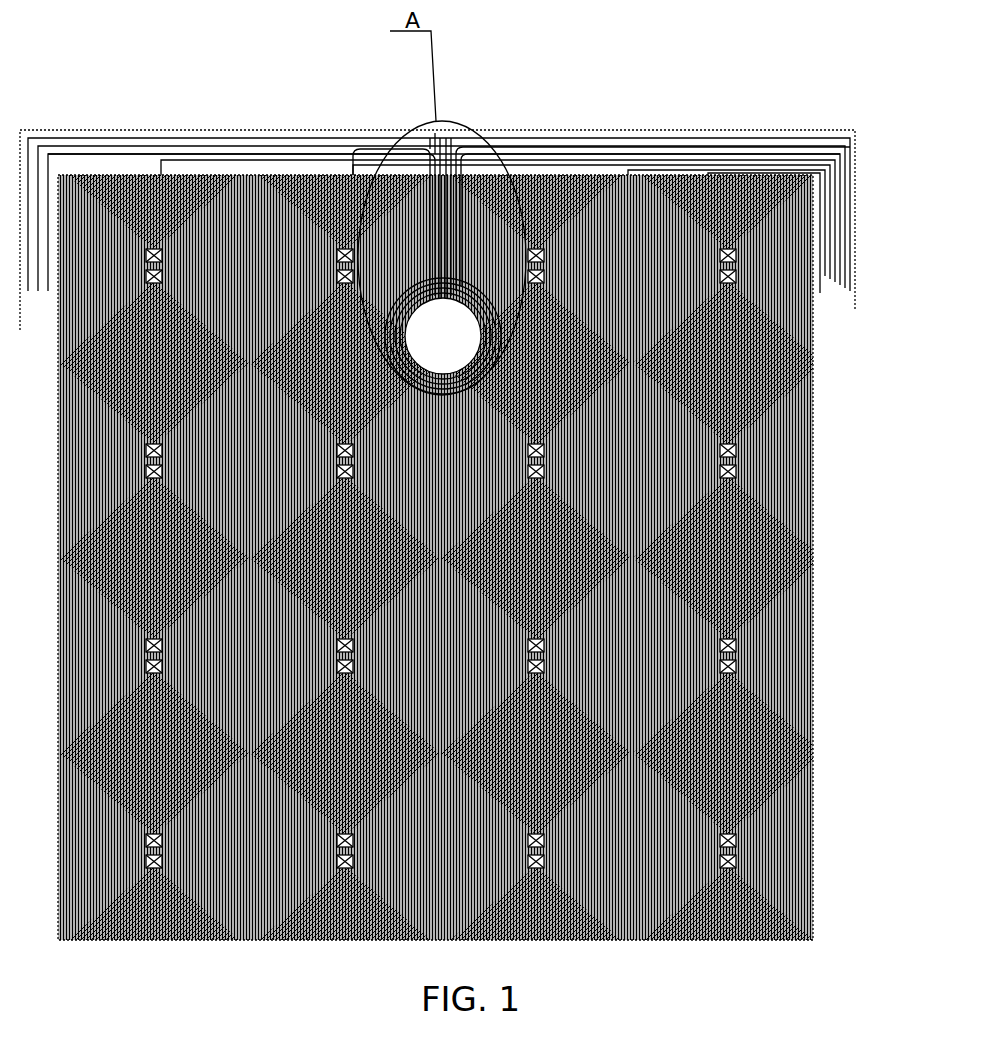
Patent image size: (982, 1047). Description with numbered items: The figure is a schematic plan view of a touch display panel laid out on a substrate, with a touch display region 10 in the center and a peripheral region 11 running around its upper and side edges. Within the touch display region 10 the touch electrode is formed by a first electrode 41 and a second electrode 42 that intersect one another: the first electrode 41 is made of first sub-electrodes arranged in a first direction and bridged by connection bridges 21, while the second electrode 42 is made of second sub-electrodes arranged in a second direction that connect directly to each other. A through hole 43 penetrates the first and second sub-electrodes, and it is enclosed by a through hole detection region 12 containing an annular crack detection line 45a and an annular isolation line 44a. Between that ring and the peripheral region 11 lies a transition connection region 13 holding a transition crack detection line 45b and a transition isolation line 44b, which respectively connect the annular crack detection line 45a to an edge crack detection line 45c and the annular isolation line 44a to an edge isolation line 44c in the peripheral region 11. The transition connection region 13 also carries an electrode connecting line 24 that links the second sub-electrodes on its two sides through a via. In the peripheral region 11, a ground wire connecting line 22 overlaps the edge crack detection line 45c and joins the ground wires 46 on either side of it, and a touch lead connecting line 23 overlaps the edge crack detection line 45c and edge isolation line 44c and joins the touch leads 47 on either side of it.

The touch display region 10 is at (440, 558).
The peripheral region 11 is at (93, 152).
The through hole detection region 12 is at (650, 185).
The transition connection region 13 is at (385, 191).
The connection bridge 21 is at (723, 242).
The ground wire connecting line 22 is at (428, 160).
The touch lead connecting line 23 is at (446, 160).
The electrode connecting line 24 is at (418, 255).
The first electrode 41 is at (703, 553).
The second electrode 42 is at (778, 470).
The through hole 43 is at (535, 160).
The annular isolation line 44a is at (440, 323).
The transition isolation line 44b is at (432, 150).
The edge isolation line 44c is at (710, 147).
The annular crack detection line 45a is at (452, 262).
The transition crack detection line 45b is at (425, 180).
The edge crack detection line 45c is at (680, 132).
The ground wire 46 is at (773, 138).
The touch lead 47 is at (617, 160).